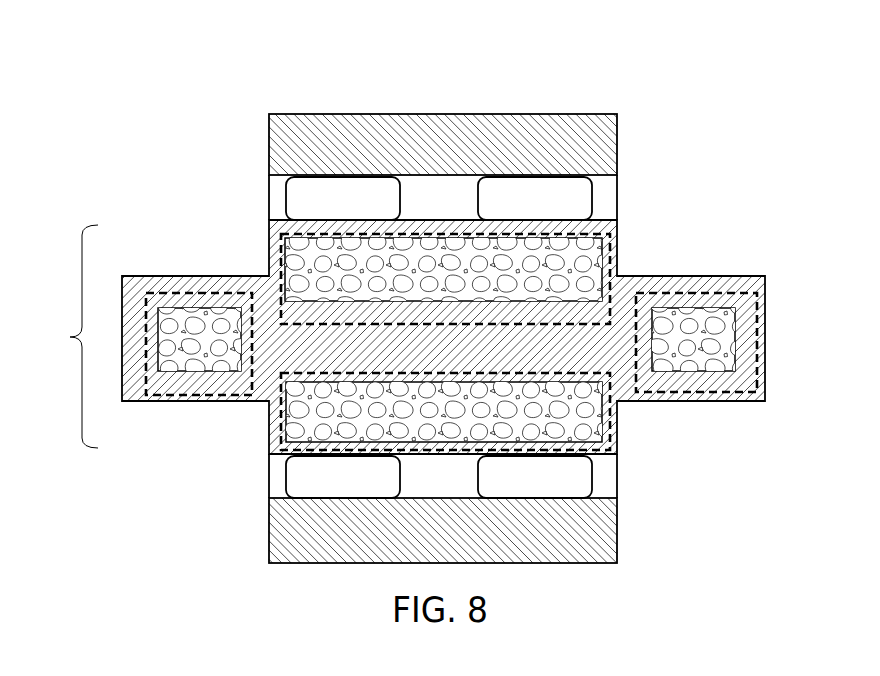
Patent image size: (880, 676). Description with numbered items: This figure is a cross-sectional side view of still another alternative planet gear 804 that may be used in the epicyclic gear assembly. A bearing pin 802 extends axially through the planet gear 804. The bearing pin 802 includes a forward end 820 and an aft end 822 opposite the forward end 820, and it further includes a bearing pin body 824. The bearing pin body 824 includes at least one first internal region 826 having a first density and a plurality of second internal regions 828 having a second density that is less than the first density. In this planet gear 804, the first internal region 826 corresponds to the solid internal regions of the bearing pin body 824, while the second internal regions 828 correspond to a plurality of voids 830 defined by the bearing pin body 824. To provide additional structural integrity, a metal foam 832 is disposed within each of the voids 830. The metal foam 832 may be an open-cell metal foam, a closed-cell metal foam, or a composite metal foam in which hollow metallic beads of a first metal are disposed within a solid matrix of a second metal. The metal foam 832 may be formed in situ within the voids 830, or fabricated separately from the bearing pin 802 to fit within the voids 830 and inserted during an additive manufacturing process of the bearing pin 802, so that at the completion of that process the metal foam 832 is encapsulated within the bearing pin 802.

The bearing pin 802 is at (70, 337).
The planet gear 804 is at (268, 60).
The forward end 820 is at (147, 276).
The aft end 822 is at (752, 276).
The bearing pin body 824 is at (628, 286).
The first internal region 826 is at (665, 293).
The second internal region 828 is at (618, 228).
The void 830 is at (542, 238).
The metal foam 832 is at (303, 238).